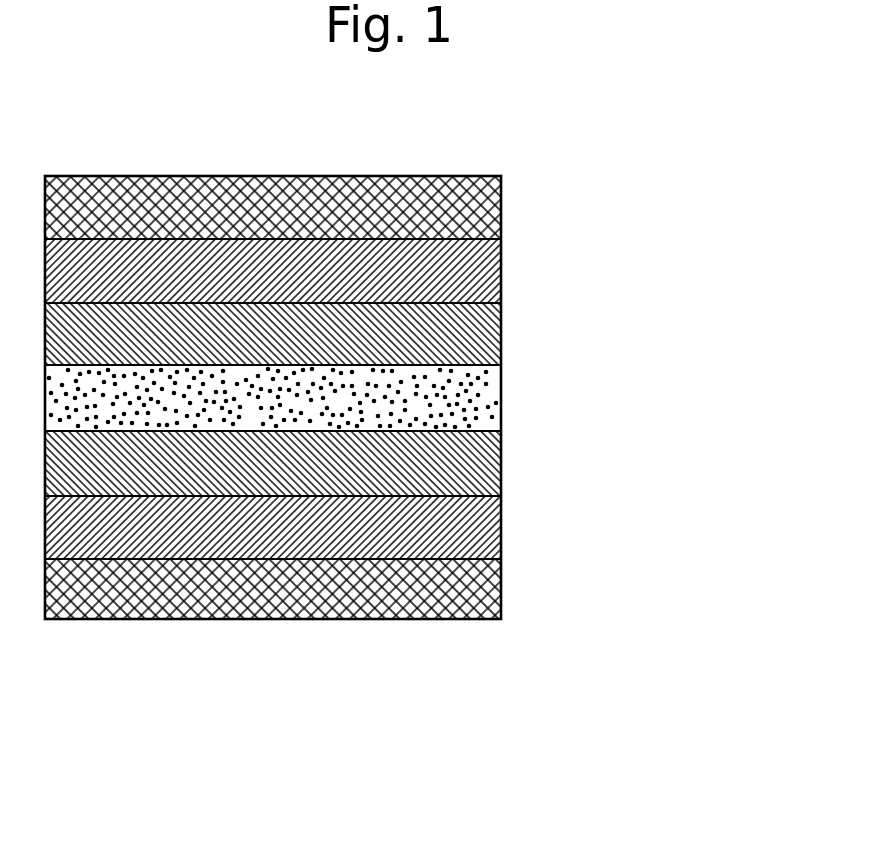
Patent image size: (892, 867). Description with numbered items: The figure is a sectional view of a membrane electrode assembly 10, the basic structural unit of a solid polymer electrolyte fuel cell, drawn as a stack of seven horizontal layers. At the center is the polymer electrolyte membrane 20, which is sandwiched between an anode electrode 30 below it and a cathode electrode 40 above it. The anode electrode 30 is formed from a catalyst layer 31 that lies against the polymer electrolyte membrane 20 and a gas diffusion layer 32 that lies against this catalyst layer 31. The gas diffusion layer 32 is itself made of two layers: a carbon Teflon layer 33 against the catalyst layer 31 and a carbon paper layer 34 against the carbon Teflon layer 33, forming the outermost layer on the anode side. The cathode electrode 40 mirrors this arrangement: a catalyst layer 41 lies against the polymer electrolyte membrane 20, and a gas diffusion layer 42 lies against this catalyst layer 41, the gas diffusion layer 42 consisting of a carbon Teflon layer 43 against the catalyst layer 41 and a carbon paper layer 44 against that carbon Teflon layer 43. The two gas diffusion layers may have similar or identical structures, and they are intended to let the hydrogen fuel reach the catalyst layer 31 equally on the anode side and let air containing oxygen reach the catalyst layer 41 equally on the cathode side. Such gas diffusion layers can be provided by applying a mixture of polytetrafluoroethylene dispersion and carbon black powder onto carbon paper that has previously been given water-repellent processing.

The membrane electrode assembly 10 is at (398, 138).
The polymer electrolyte membrane 20 is at (482, 395).
The anode electrode 30 is at (717, 427).
The catalyst layer 31 is at (480, 465).
The gas diffusion layer 32 is at (624, 493).
The carbon Teflon layer 33 is at (480, 527).
The carbon paper layer 34 is at (473, 590).
The cathode electrode 40 is at (724, 172).
The catalyst layer 41 is at (480, 333).
The gas diffusion layer 42 is at (628, 173).
The carbon Teflon layer 43 is at (480, 272).
The carbon paper layer 44 is at (483, 214).